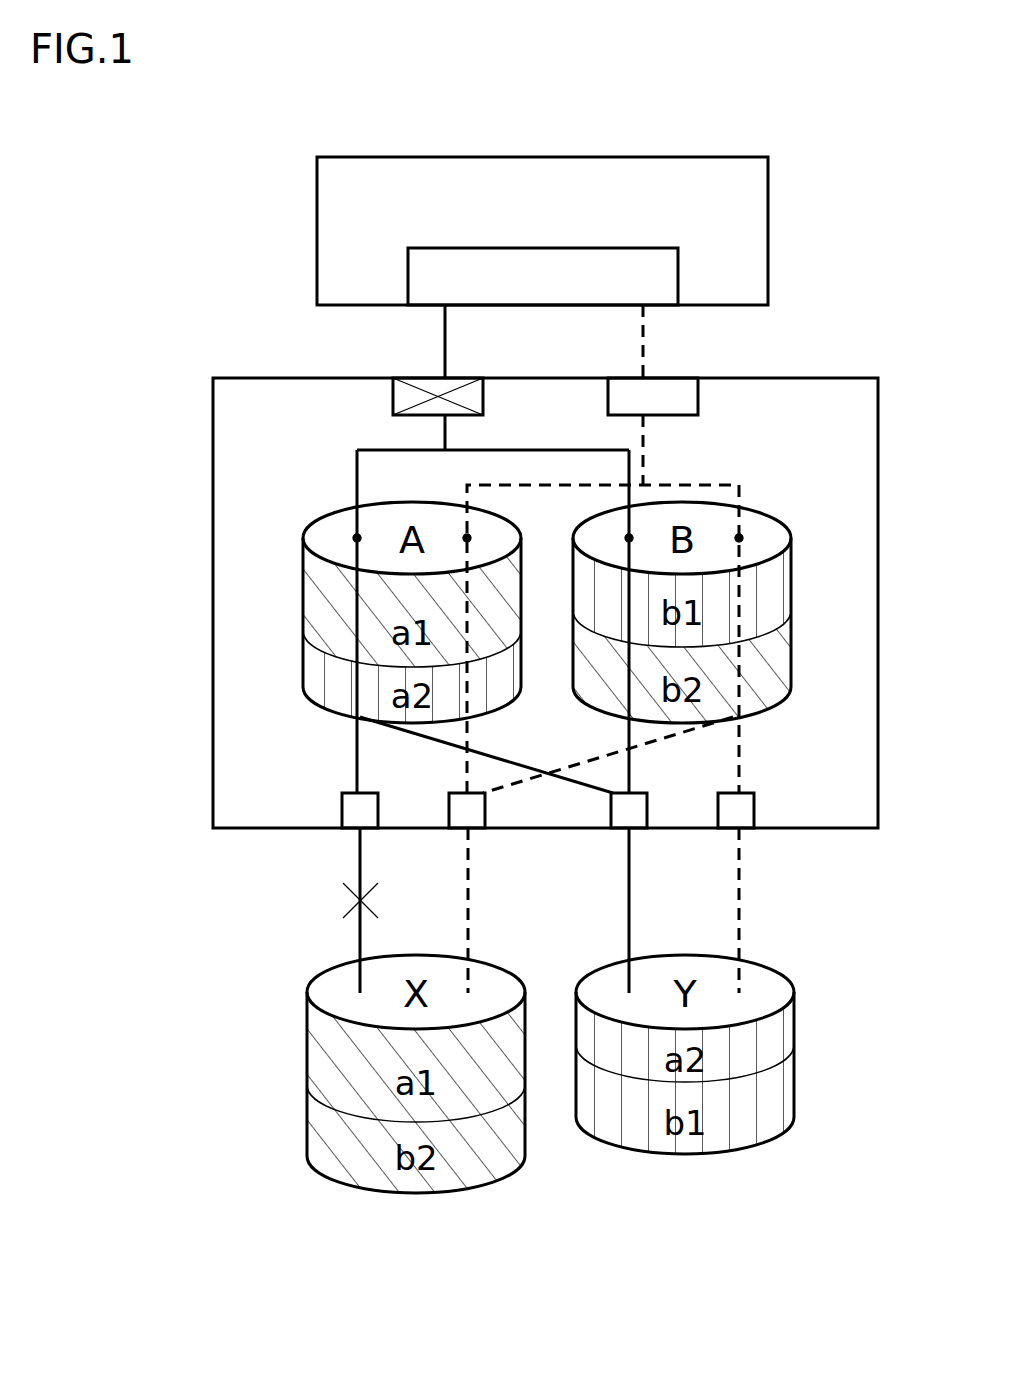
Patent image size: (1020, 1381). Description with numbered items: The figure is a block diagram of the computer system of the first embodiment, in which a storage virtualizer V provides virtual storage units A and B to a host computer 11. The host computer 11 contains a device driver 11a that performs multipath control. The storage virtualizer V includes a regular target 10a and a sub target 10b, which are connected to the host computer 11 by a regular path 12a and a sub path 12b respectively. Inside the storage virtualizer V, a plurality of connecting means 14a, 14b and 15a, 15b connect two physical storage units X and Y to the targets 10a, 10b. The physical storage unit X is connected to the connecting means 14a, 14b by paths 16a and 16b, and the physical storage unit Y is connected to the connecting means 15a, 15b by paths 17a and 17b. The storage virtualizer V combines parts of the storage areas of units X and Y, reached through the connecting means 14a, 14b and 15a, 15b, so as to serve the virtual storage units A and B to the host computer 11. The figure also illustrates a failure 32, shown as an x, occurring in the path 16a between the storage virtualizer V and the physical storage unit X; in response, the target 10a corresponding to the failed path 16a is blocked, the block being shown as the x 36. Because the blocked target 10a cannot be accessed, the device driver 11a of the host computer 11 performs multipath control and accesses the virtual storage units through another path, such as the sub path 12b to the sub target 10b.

The host computer 11 is at (758, 186).
The device driver 11a is at (672, 275).
The storage virtualizer V is at (255, 405).
The regular target 10a is at (403, 392).
The sub target 10b is at (680, 388).
The regular path 12a is at (447, 341).
The sub path 12b is at (641, 341).
The block 36 is at (487, 392).
The connecting means 14a is at (370, 821).
The connecting means 14b is at (465, 820).
The connecting means 15a is at (638, 820).
The connecting means 15b is at (735, 820).
The path 16a is at (358, 848).
The path 16b is at (470, 887).
The path 17a is at (628, 898).
The path 17b is at (742, 902).
The failure 32 is at (348, 892).